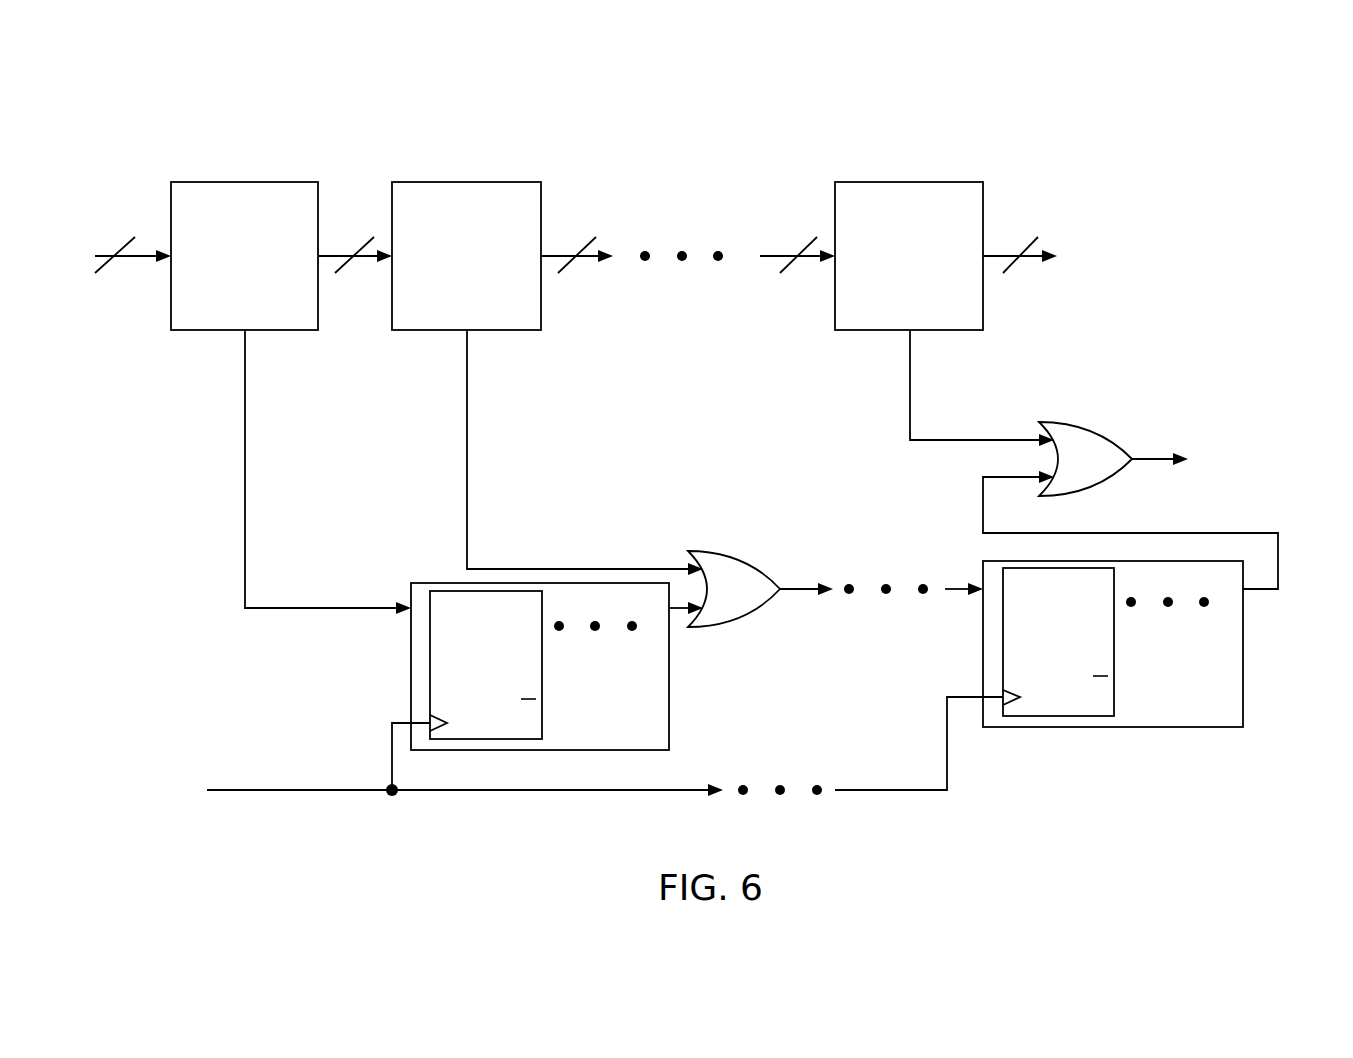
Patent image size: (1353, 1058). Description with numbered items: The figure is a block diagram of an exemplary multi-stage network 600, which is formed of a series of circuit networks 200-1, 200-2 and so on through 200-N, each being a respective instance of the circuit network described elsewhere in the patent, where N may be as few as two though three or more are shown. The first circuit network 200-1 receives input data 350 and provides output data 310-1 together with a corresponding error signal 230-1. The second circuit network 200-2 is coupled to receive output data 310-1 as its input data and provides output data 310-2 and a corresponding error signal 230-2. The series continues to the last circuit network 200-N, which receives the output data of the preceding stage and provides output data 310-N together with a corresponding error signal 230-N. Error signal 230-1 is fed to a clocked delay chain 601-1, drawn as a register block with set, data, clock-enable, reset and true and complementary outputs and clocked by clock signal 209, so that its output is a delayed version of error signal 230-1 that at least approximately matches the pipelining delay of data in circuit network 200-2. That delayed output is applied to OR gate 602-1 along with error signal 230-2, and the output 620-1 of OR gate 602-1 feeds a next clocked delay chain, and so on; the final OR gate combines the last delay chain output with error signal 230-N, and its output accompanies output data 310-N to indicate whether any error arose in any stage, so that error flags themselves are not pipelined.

The multi-stage network 600 is at (1218, 72).
The circuit network 200-1 is at (244, 256).
The circuit network 200-2 is at (466, 256).
The circuit network 200-N is at (909, 256).
The input data 350 is at (113, 262).
The output data 310-1 is at (340, 253).
The output data 310-2 is at (558, 253).
The output data 310-N is at (1003, 253).
The error signal 230-1 is at (245, 440).
The error signal 230-2 is at (467, 440).
The error signal 230-N is at (910, 403).
The OR gate 602-1 is at (728, 553).
The output of OR gate 620-1 is at (800, 586).
The clocked delay chain 601-1 is at (410, 707).
The clock signal 209 is at (246, 790).